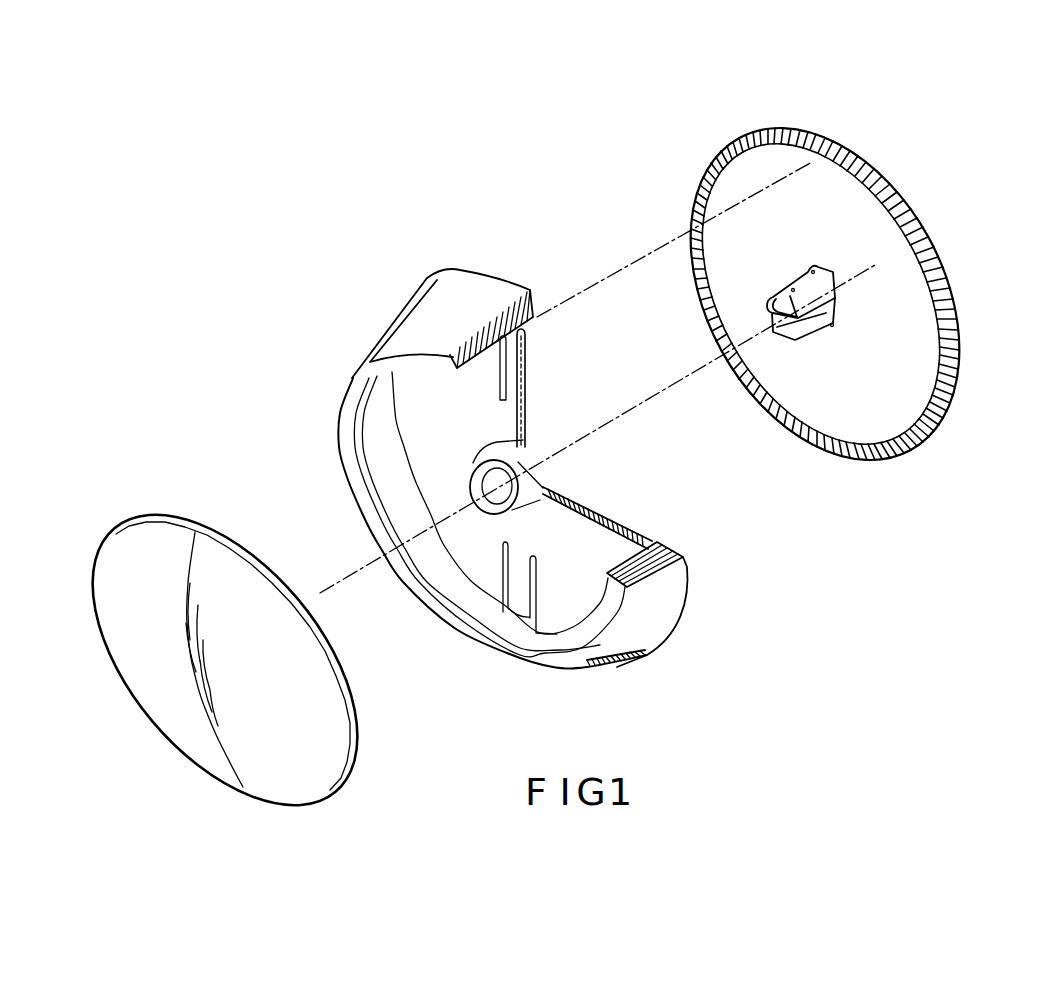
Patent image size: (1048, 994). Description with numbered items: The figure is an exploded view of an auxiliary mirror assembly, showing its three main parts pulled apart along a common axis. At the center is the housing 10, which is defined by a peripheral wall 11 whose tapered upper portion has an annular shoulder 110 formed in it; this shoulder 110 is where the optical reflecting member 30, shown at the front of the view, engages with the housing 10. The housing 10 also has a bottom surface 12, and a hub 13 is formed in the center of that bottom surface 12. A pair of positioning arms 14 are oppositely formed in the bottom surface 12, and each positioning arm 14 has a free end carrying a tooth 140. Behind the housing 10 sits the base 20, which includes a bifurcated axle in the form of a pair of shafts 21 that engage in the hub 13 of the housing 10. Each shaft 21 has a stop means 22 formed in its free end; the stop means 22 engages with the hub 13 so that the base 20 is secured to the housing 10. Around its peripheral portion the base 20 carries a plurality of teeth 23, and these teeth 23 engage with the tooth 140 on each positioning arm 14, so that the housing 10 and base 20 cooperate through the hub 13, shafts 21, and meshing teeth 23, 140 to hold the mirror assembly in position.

The housing 10 is at (372, 330).
The peripheral wall 11 is at (463, 298).
The bottom surface 12 is at (587, 547).
The hub 13 is at (500, 503).
The positioning arms 14 is at (512, 370).
The tooth 140 is at (530, 331).
The annular shoulder 110 is at (360, 437).
The base 20 is at (742, 178).
The shafts 21 is at (818, 300).
The stop means 22 is at (793, 268).
The teeth 23 is at (957, 385).
The optical reflecting member 30 is at (133, 545).